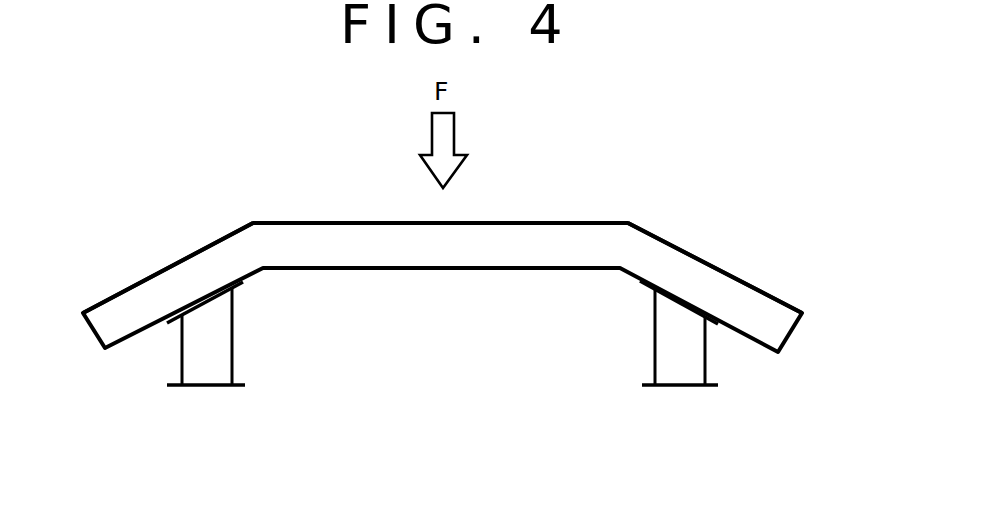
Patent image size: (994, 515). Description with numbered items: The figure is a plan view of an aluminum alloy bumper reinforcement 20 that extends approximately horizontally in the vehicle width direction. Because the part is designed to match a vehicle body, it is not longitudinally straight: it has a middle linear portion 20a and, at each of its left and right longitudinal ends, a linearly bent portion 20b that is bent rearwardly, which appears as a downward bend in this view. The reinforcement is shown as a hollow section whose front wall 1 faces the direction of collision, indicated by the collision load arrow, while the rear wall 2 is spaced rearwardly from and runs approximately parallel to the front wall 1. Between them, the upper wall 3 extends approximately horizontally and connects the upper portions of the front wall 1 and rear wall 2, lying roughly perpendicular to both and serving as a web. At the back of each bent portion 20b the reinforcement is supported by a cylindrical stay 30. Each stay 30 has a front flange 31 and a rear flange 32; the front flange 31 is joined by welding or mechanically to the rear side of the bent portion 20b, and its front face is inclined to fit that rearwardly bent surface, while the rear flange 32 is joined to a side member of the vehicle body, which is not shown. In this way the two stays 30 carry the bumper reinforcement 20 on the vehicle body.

The front wall 1 is at (558, 223).
The rear wall 2 is at (498, 268).
The upper wall 3 is at (412, 243).
The bumper reinforcement 20 is at (634, 209).
The middle linear portion 20a is at (470, 223).
The bent portion 20b is at (130, 285).
The stay 30 is at (207, 353).
The front flange 31 is at (243, 284).
The rear flange 32 is at (173, 388).